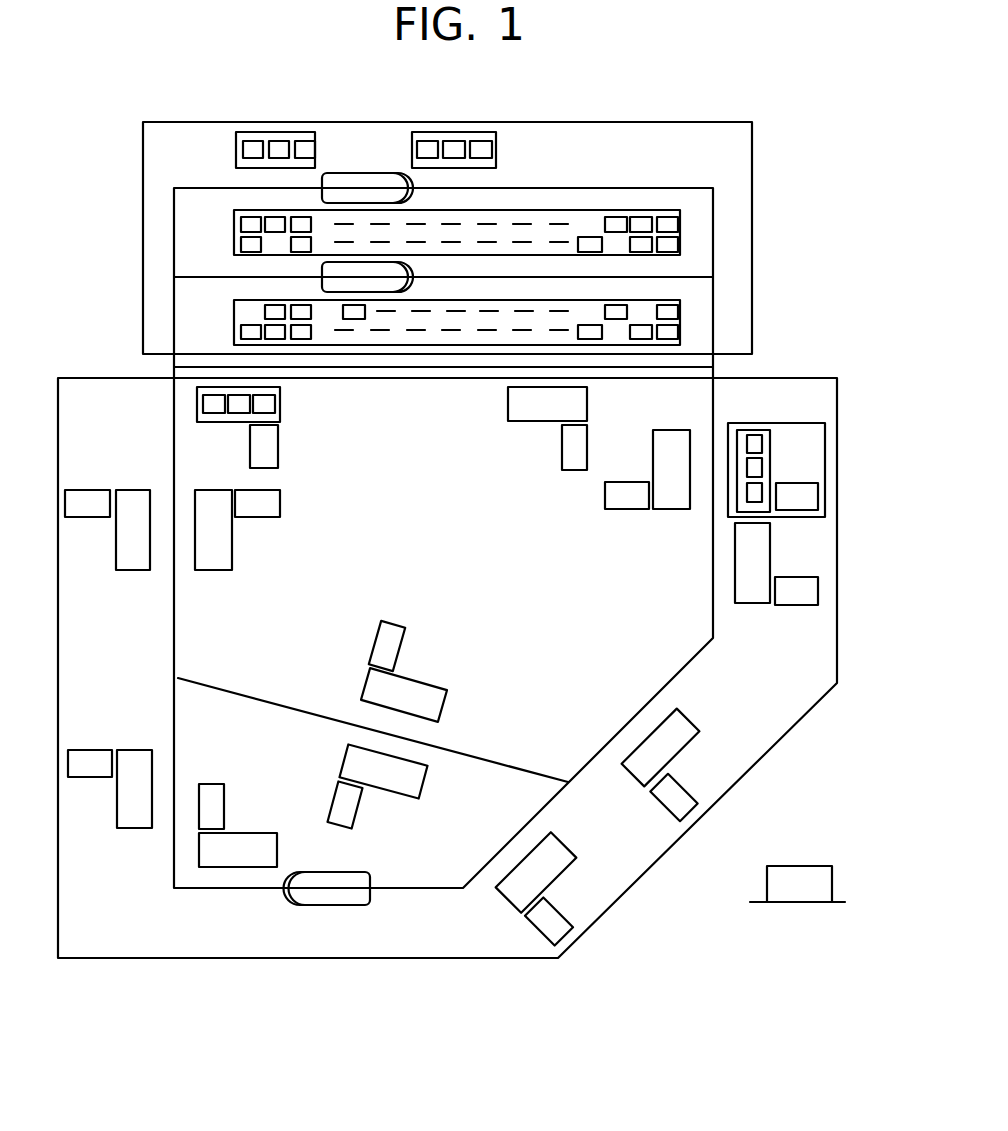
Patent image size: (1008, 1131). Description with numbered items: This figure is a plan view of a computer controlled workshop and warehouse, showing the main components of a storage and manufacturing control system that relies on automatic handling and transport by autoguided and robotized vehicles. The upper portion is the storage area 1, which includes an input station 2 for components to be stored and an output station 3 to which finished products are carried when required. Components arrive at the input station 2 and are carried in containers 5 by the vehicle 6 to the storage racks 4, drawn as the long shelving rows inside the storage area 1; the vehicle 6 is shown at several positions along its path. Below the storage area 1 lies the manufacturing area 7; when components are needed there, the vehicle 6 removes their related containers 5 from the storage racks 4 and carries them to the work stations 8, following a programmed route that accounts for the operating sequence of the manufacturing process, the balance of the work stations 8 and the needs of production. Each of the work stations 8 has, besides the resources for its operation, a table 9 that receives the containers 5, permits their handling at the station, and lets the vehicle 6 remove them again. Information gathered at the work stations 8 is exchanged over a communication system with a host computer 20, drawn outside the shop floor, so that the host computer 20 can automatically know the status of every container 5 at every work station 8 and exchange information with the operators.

The storage area 1 is at (752, 221).
The input station 2 is at (478, 139).
The output station 3 is at (255, 148).
The storage rack 4 is at (680, 317).
The containers 5 is at (277, 147).
The vehicle 6 is at (365, 263).
The manufacturing area 7 is at (795, 723).
The work stations 8 is at (817, 425).
The table 9 is at (773, 440).
The host computer 20 is at (833, 878).